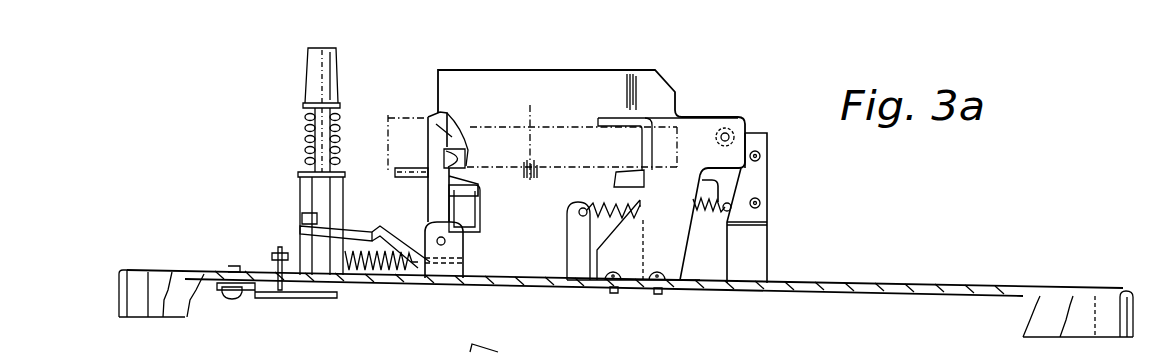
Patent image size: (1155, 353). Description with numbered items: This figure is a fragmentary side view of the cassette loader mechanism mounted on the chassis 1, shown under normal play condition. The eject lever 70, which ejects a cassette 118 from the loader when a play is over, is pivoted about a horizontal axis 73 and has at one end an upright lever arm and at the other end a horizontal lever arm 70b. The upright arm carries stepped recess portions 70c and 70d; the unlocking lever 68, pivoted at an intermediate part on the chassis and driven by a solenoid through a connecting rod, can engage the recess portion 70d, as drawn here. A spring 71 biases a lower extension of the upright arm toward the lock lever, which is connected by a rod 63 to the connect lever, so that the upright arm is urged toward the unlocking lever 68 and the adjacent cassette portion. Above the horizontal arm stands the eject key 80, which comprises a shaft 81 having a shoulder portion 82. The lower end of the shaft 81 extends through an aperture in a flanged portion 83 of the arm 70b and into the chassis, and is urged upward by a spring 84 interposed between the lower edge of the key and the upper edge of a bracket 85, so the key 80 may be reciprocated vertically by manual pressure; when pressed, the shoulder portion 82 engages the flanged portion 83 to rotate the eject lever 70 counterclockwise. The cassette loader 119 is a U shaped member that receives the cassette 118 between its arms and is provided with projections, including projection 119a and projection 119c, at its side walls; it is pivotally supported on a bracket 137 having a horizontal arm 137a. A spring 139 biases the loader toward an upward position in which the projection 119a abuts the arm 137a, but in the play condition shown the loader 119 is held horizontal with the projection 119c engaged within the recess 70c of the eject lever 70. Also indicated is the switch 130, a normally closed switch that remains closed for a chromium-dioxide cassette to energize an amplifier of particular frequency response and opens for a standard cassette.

The chassis 1 is at (954, 285).
The eject key 80 is at (308, 73).
The shaft 81 is at (318, 133).
The spring 84 is at (338, 144).
The bracket 85 is at (300, 193).
The shoulder portion 82 is at (303, 218).
The flanged portion 83 is at (358, 228).
The rod 63 is at (272, 257).
The spring 71 is at (368, 280).
The eject lever 70 is at (448, 126).
The horizontal lever arm 70b is at (424, 272).
The recess portion 70c is at (460, 140).
The recess portion 70d is at (421, 184).
The horizontal axis 73 is at (445, 241).
The unlocking lever 68 is at (481, 219).
The cassette 118 is at (402, 112).
The cassette loader 119 is at (510, 70).
The projection 119a is at (623, 171).
The projection 119c is at (466, 156).
The bracket 137 is at (677, 240).
The horizontal arm 137a is at (606, 117).
The spring 139 is at (597, 204).
The switch 130 is at (768, 182).